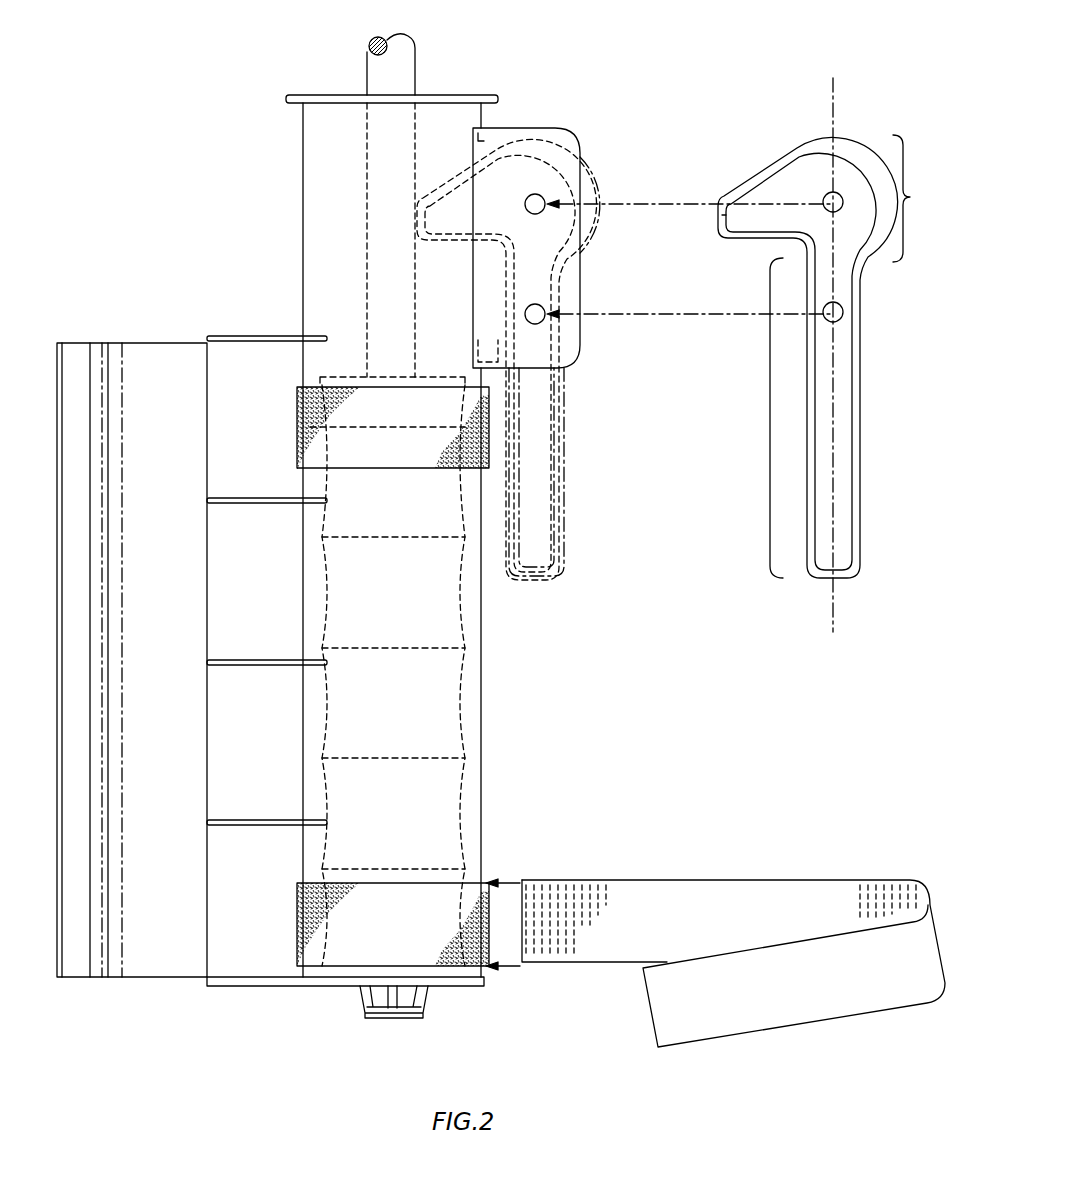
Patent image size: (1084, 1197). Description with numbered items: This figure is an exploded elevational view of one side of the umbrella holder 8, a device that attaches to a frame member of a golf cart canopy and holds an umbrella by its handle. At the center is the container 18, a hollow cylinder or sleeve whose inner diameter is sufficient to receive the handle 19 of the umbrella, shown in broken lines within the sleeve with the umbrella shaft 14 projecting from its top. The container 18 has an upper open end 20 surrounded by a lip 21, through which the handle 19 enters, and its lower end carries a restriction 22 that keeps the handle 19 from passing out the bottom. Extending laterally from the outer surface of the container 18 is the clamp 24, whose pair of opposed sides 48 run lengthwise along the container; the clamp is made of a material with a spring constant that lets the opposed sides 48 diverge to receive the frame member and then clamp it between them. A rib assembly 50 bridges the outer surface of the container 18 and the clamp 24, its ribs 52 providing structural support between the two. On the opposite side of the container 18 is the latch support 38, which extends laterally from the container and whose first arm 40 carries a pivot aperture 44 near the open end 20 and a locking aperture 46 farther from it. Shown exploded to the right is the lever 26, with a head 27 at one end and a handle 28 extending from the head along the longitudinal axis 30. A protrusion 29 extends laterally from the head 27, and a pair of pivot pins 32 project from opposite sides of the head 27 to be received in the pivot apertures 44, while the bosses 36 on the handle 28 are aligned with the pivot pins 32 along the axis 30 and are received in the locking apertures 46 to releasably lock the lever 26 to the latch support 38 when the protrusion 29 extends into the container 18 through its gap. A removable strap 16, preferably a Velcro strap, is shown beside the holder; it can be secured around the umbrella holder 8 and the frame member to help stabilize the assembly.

The umbrella holder 8 is at (183, 150).
The shaft 14 is at (372, 72).
The removable strap 16 is at (736, 888).
The container 18 is at (310, 183).
The handle 19 is at (465, 700).
The upper open end 20 is at (437, 75).
The lip 21 is at (313, 95).
The restriction 22 is at (338, 986).
The clamp 24 is at (150, 1004).
The lever 26 is at (777, 125).
The head 27 is at (910, 197).
The handle 28 is at (768, 412).
The protrusion 29 is at (720, 222).
The longitudinal axis 30 is at (835, 86).
The pivot pin 32 is at (842, 204).
The boss 36 is at (845, 315).
The latch support 38 is at (549, 117).
The first arm 40 is at (560, 368).
The pivot aperture 44 is at (538, 200).
The locking aperture 46 is at (533, 312).
The opposed side 48 is at (165, 343).
The rib assembly 50 is at (265, 318).
The rib 52 is at (268, 341).